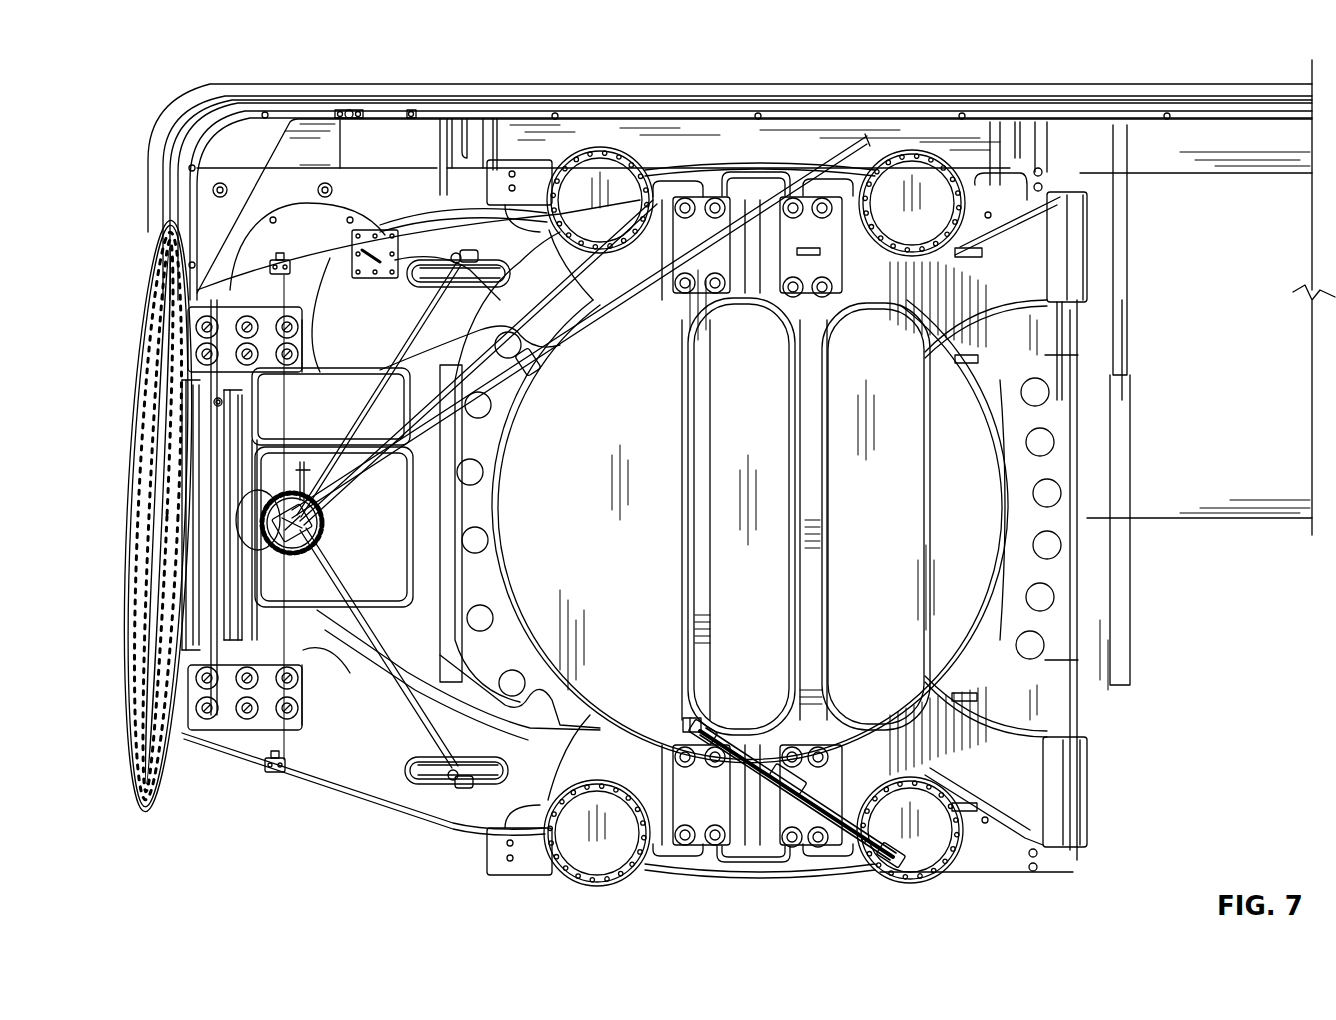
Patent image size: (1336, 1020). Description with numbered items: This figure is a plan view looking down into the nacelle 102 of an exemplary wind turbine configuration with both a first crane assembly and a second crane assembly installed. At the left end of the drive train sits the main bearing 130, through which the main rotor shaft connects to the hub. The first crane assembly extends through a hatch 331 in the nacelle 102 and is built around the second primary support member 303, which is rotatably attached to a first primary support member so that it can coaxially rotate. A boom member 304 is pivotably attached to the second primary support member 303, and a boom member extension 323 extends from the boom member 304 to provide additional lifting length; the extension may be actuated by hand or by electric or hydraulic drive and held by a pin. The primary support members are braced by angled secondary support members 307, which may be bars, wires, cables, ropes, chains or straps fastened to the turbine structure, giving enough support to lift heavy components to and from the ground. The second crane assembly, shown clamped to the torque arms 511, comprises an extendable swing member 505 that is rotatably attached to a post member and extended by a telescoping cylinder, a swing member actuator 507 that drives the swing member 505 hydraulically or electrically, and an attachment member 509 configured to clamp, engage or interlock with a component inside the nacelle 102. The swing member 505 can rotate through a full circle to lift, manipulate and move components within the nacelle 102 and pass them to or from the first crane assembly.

The nacelle 102 is at (712, 103).
The boom member extension 323 is at (838, 138).
The secondary support members 307 is at (505, 292).
The boom member 304 is at (493, 387).
The hatch 331 is at (330, 522).
The second primary support member 303 is at (325, 530).
The main bearing 130 is at (190, 637).
The torque arms 511 is at (694, 576).
The attachment member 509 is at (688, 720).
The extendable swing member 505 is at (720, 725).
The swing member actuator 507 is at (740, 768).